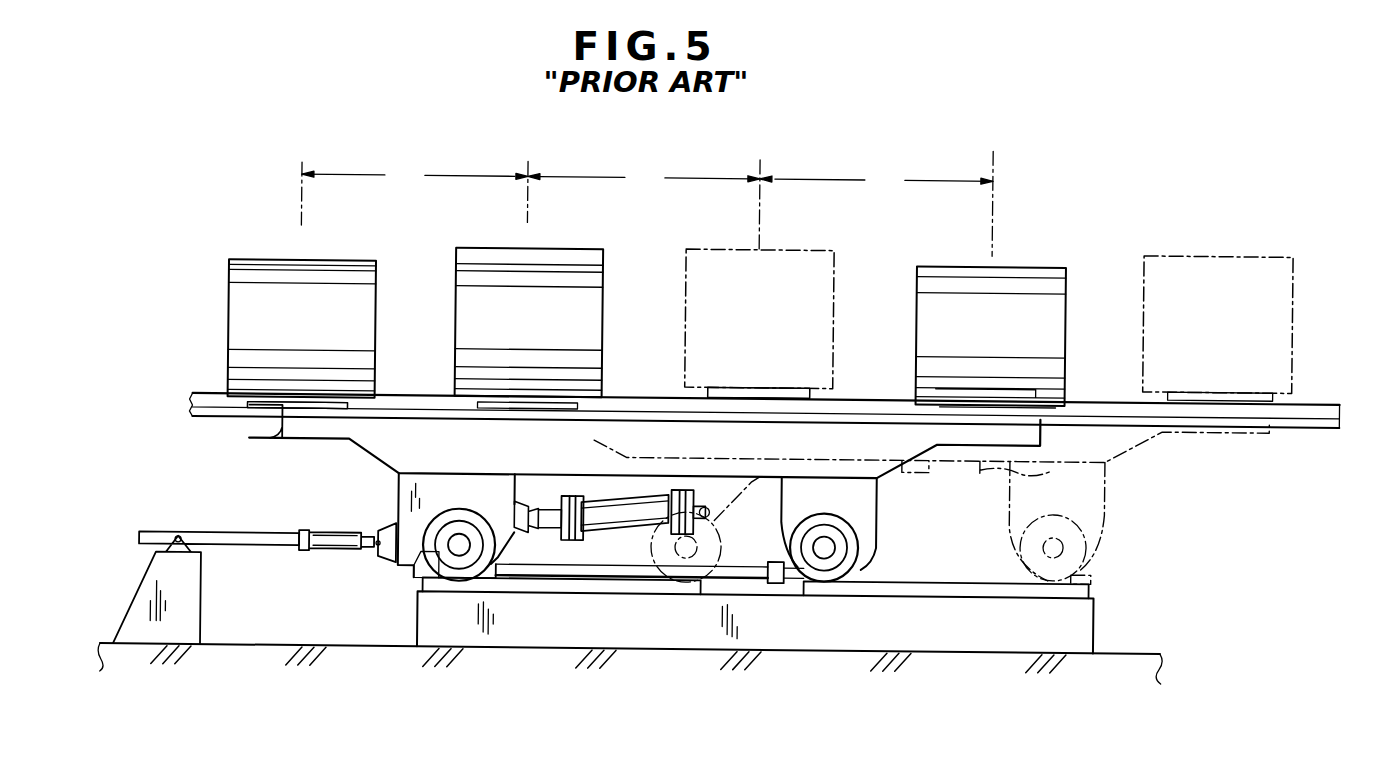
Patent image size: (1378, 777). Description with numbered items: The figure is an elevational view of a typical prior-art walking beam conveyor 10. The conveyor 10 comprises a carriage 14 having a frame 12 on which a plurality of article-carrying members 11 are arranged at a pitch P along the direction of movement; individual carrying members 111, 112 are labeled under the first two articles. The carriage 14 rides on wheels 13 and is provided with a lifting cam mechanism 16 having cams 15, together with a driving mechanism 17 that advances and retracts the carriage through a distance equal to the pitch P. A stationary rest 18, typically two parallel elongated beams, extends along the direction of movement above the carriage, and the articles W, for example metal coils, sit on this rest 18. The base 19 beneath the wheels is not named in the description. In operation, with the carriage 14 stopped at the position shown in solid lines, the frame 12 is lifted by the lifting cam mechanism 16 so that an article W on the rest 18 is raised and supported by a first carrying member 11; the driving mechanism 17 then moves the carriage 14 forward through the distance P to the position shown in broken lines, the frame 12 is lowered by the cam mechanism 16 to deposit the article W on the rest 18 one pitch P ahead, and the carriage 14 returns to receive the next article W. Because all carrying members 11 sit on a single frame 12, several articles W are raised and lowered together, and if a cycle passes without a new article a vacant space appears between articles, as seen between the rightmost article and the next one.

The walking beam conveyor 10 is at (228, 445).
The article-carrying member 11 is at (262, 438).
The pallet support (first) 111 is at (332, 395).
The pallet support (second) 112 is at (718, 381).
The frame 12 is at (352, 433).
The wheels 13 is at (456, 570).
The carriage 14 is at (374, 471).
The cams 15 is at (488, 570).
The lifting cam mechanism 16 is at (612, 542).
The driving mechanism 17 is at (250, 547).
The stationary rest 18 is at (195, 384).
The base 19 is at (682, 578).
The article W is at (364, 252).
The pitch P is at (647, 200).